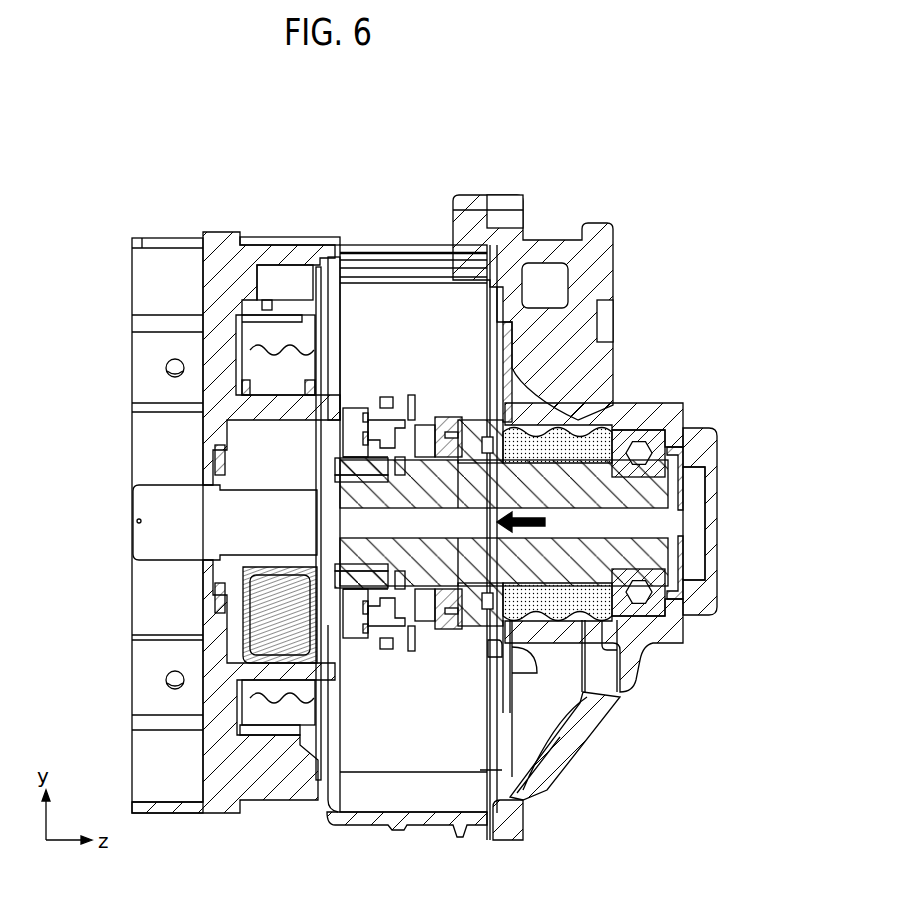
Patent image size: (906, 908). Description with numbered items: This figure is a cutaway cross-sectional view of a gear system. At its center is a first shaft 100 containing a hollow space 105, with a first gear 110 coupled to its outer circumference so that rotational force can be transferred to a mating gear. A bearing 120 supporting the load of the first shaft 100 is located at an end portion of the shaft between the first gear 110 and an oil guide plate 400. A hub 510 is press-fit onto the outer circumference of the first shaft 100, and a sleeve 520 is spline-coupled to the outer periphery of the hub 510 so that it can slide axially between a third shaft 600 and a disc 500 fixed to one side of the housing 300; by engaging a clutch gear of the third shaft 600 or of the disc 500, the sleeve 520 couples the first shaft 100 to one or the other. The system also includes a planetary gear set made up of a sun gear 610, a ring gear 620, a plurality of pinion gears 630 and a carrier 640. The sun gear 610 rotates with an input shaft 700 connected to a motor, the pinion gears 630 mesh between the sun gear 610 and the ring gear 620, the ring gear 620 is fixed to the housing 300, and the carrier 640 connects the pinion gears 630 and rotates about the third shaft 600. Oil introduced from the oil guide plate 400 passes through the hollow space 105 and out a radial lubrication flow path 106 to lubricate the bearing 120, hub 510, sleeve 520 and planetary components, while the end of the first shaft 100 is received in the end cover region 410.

The first shaft 100 is at (665, 552).
The hollow space 105 is at (672, 600).
The lubrication flow path 106 is at (222, 608).
The first gear 110 is at (577, 408).
The bearing 120 is at (637, 423).
The housing 300 is at (611, 263).
The oil guide plate 400 is at (705, 478).
The through hole 410 is at (663, 520).
The disc 500 is at (512, 337).
The hub 510 is at (410, 407).
The sleeve 520 is at (383, 400).
The third shaft 600 is at (356, 418).
The sun gear 610 is at (245, 468).
The ring gear 620 is at (283, 332).
The pinion gears 630 is at (232, 362).
The carrier 640 is at (228, 368).
The input shaft 700 is at (133, 540).